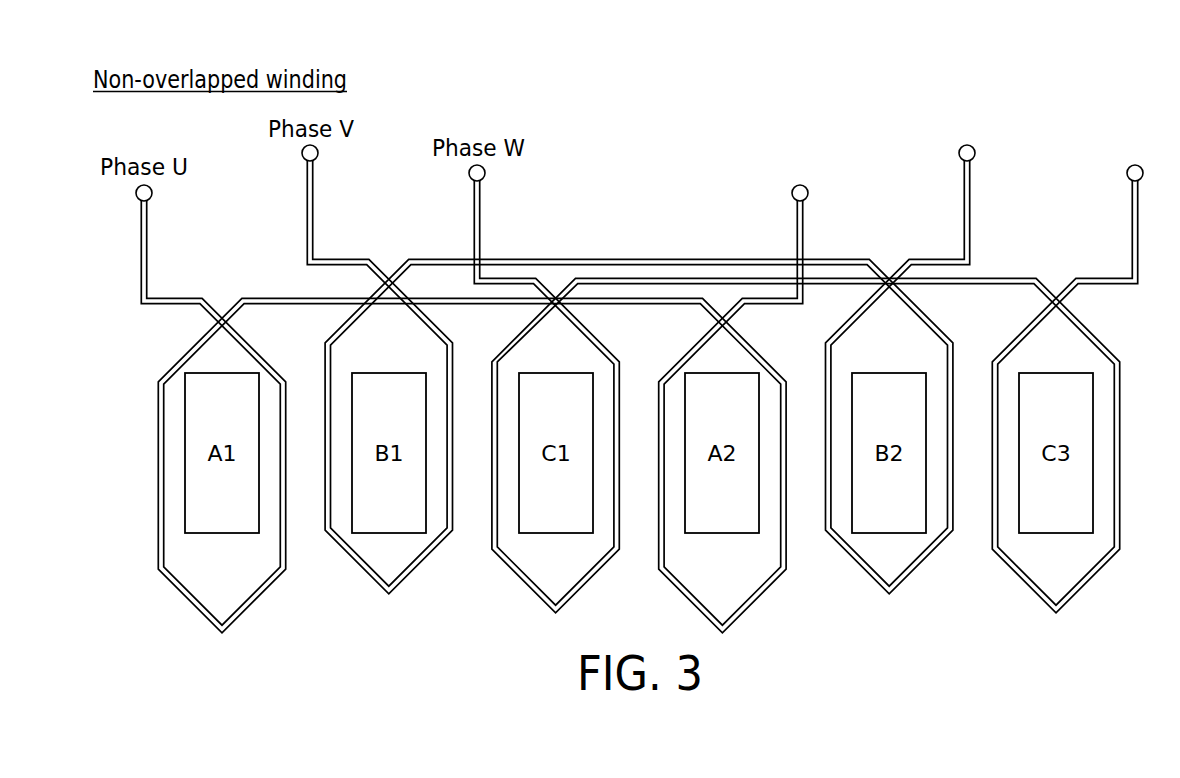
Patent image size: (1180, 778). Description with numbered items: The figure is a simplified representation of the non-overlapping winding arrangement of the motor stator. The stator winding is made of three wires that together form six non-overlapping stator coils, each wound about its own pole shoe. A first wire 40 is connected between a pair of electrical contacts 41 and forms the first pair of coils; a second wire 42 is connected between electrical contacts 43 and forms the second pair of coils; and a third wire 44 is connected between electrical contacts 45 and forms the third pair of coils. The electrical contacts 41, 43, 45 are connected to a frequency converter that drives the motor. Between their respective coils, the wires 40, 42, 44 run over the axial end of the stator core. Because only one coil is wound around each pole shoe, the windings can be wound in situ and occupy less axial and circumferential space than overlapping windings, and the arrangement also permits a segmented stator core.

The first wire 40 is at (172, 298).
The electrical contacts 41 is at (152, 193).
The second wire 42 is at (340, 259).
The electrical contacts 43 is at (318, 153).
The third wire 44 is at (507, 278).
The electrical contacts 45 is at (485, 173).